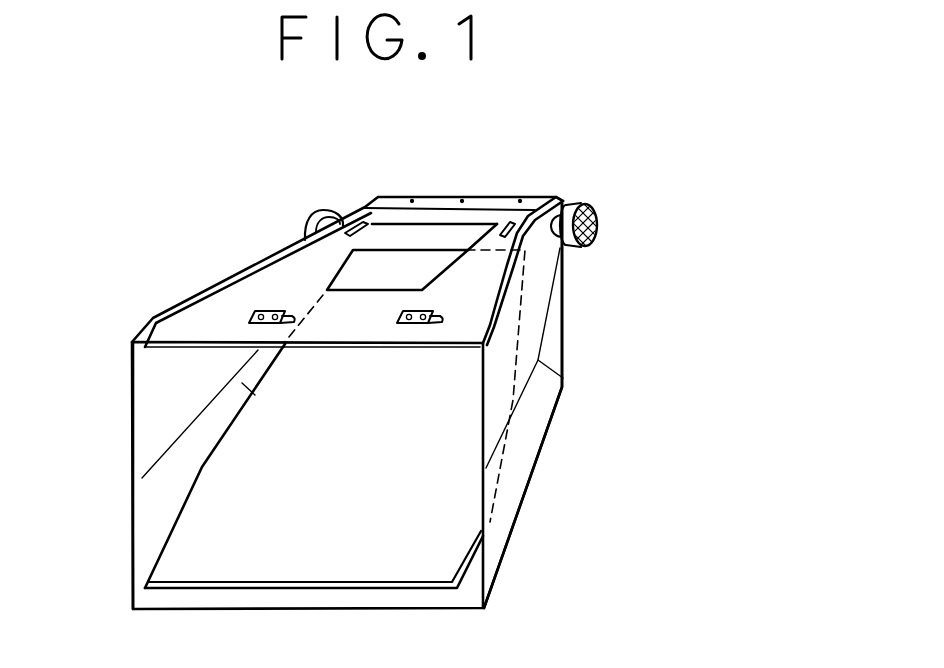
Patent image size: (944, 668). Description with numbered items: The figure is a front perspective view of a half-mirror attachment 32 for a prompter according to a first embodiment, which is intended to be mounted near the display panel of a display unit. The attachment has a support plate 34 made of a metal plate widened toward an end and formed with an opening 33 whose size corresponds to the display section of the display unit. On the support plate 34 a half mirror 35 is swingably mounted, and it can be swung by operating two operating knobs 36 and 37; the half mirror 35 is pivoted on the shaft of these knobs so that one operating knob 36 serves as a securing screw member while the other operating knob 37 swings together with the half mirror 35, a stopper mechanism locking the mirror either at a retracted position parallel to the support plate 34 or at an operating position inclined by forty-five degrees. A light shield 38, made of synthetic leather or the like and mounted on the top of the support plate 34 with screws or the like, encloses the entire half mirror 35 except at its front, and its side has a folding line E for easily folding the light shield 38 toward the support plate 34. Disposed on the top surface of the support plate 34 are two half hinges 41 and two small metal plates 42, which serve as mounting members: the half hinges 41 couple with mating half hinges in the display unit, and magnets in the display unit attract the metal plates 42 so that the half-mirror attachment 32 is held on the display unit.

The half-mirror attachment 32 is at (290, 182).
The opening 33 is at (451, 233).
The support plate 34 is at (263, 280).
The half mirror 35 is at (422, 543).
The operating knob 36 is at (327, 212).
The operating knob 37 is at (605, 189).
The light shield 38 is at (131, 384).
The half hinge 41 is at (245, 320).
The small metal plate 42 is at (356, 218).
The folding line E is at (164, 457).